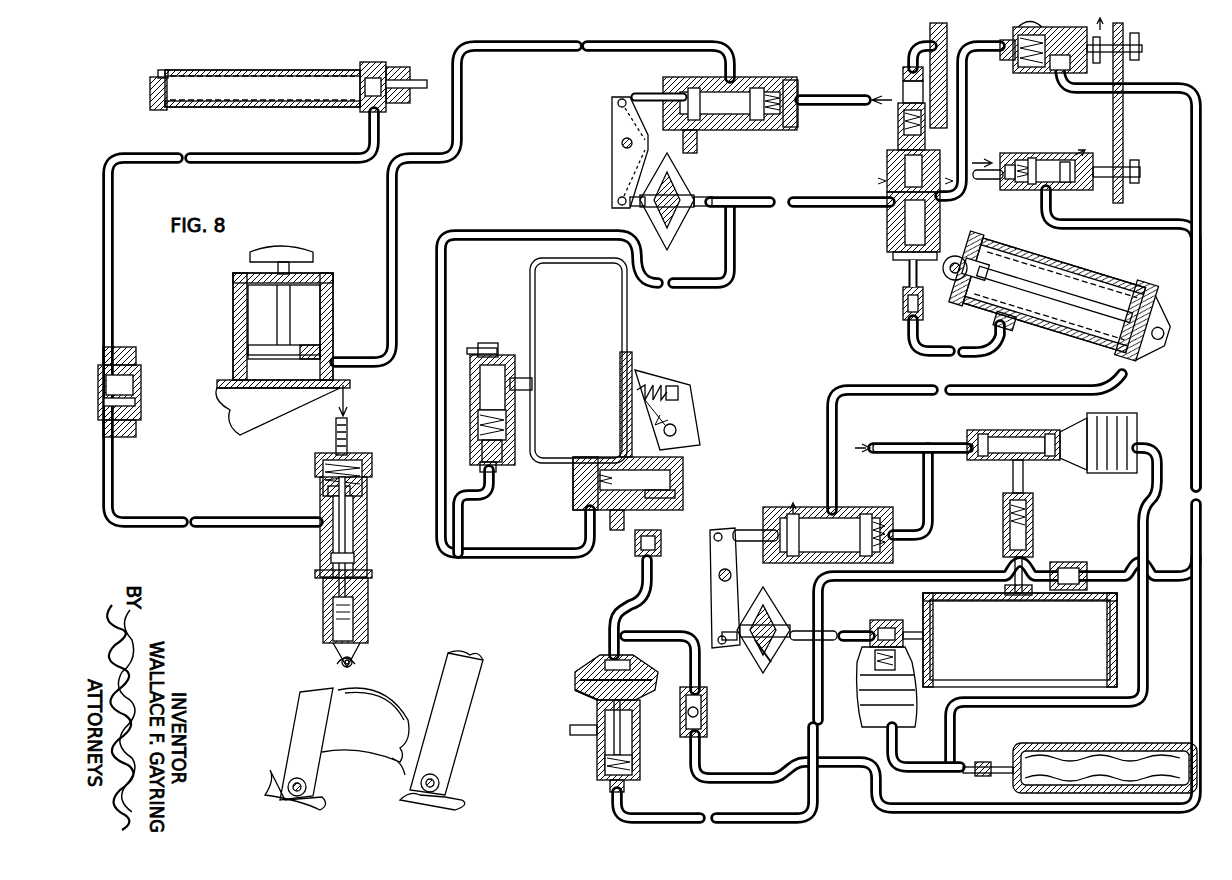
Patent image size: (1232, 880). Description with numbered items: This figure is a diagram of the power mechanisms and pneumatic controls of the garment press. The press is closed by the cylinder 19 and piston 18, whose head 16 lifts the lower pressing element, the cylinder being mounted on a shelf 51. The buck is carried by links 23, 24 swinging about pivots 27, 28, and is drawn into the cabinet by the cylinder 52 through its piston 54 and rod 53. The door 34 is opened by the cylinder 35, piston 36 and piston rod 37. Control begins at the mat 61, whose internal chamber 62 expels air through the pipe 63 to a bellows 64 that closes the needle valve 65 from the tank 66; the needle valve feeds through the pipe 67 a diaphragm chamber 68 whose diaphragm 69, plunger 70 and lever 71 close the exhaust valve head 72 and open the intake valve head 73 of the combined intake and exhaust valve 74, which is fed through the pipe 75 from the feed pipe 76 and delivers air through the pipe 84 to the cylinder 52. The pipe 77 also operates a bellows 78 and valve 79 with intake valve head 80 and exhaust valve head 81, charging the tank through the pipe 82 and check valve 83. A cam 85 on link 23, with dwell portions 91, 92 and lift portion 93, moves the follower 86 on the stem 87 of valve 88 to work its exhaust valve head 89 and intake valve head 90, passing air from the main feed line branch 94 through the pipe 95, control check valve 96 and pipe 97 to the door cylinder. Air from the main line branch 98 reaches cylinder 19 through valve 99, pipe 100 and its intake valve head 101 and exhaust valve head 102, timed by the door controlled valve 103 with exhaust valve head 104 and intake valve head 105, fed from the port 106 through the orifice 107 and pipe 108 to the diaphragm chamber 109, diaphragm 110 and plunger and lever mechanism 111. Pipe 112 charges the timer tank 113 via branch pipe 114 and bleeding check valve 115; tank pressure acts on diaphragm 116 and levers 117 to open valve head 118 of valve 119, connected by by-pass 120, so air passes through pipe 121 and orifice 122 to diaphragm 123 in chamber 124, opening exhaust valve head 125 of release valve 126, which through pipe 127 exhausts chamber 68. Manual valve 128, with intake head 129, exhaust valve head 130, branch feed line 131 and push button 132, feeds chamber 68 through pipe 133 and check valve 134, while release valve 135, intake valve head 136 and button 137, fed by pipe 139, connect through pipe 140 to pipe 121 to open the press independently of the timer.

The head 16 is at (312, 252).
The piston 18 is at (322, 346).
The cylinder 19 is at (325, 316).
The link 23 is at (300, 745).
The link 24 is at (465, 720).
The pivot 27 is at (308, 788).
The pivot 28 is at (445, 782).
The door 34 is at (925, 35).
The cylinder 35 is at (300, 100).
The piston 36 is at (363, 70).
The piston rod 37 is at (411, 80).
The shelf 51 is at (270, 410).
The cylinder 52 is at (1090, 345).
The rod 53 is at (1100, 287).
The piston 54 is at (1132, 292).
The mat 61 is at (1165, 746).
The internal chamber 62 is at (1075, 753).
The pipe 63 is at (968, 768).
The bellows 64 is at (915, 700).
The needle valve 65 is at (900, 621).
The tank 66 is at (1020, 640).
The pipe 67 is at (850, 632).
The diaphragm chamber 68 is at (780, 670).
The diaphragm 69 is at (768, 678).
The plunger 70 is at (748, 648).
The lever 71 is at (712, 576).
The exhaust valve head 72 is at (788, 514).
The intake valve head 73 is at (876, 514).
The combined intake and exhaust valve 74 is at (802, 516).
The pipe 75 is at (933, 505).
The feed pipe 76 is at (915, 448).
The pipe 77 is at (1147, 660).
The bellows 78 is at (1135, 424).
The combined intake and exhaust valve 79 is at (1035, 433).
The intake valve head 80 is at (975, 430).
The exhaust valve head 81 is at (1062, 432).
The pipe 82 is at (1025, 478).
The check valve 83 is at (1035, 527).
The pipe 84 is at (900, 396).
The cam 85 is at (386, 716).
The follower 86 is at (360, 675).
The stem 87 is at (367, 600).
The combined intake and exhaust valve 88 is at (322, 540).
The exhaust valve head 89 is at (364, 546).
The intake valve head 90 is at (362, 493).
The dwell portion 91 is at (335, 688).
The dwell portion 92 is at (400, 776).
The lift portion 93 is at (392, 721).
The main feed line branch 94 is at (352, 440).
The pipe 95 is at (275, 520).
The control check valve 96 is at (141, 395).
The pipe 97 is at (110, 318).
The main line branch 98 is at (820, 97).
The intake and exhaust valve 99 is at (735, 125).
The pipe 100 is at (532, 50).
The intake valve head 101 is at (760, 86).
The exhaust valve head 102 is at (697, 72).
The door controlled combined intake and exhaust valve 103 is at (900, 226).
The exhaust valve head 104 is at (890, 180).
The intake valve head 105 is at (895, 258).
The port 106 is at (900, 348).
The choke or orifice 107 is at (905, 304).
The pipe 108 is at (780, 208).
The diaphragm chamber 109 is at (690, 186).
The diaphragm 110 is at (680, 226).
The plunger and lever mechanism 111 is at (612, 155).
The pipe 112 is at (545, 233).
The timer tank 113 is at (578, 360).
The branch pipe 114 is at (498, 485).
The bleeding check valve 115 is at (504, 347).
The diaphragm 116 is at (638, 385).
The levers 117 is at (680, 428).
The valve head 118 is at (617, 512).
The valve 119 is at (670, 512).
The by-pass 120 is at (505, 556).
The pipe 121 is at (614, 613).
The choke or orifice 122 is at (635, 560).
The diaphragm 123 is at (572, 684).
The diaphragm chamber 124 is at (598, 660).
The exhaust valve head 125 is at (597, 770).
The release valve 126 is at (640, 745).
The pipe 127 is at (688, 815).
The combined intake and exhaust valve 128 is at (1032, 190).
The intake head or button 129 is at (1028, 158).
The exhaust valve head 130 is at (1072, 160).
The branch feed line 131 is at (983, 182).
The push button 132 is at (1142, 178).
The pipe 133 is at (1102, 222).
The check valve 134 is at (1075, 562).
The manually operable release valve 135 is at (1050, 78).
The intake valve head 136 is at (1012, 43).
The button 137 is at (1140, 48).
The pipe 139 is at (966, 150).
The pipe 140 is at (1075, 92).